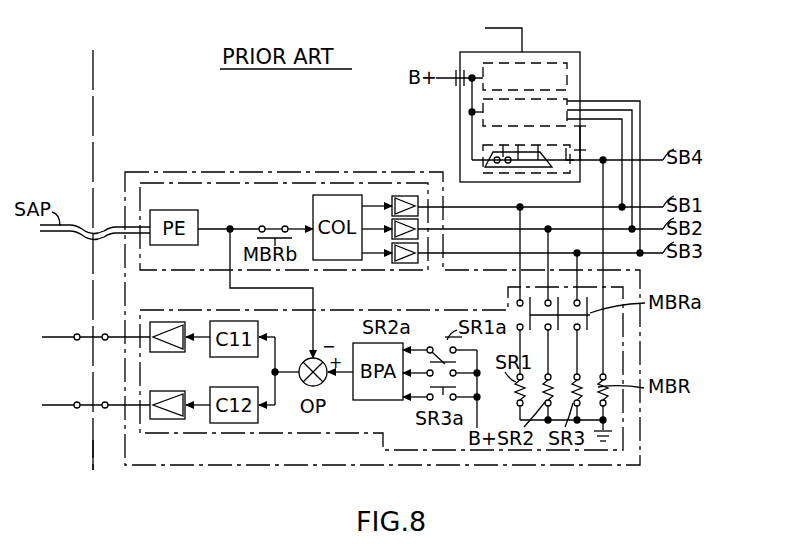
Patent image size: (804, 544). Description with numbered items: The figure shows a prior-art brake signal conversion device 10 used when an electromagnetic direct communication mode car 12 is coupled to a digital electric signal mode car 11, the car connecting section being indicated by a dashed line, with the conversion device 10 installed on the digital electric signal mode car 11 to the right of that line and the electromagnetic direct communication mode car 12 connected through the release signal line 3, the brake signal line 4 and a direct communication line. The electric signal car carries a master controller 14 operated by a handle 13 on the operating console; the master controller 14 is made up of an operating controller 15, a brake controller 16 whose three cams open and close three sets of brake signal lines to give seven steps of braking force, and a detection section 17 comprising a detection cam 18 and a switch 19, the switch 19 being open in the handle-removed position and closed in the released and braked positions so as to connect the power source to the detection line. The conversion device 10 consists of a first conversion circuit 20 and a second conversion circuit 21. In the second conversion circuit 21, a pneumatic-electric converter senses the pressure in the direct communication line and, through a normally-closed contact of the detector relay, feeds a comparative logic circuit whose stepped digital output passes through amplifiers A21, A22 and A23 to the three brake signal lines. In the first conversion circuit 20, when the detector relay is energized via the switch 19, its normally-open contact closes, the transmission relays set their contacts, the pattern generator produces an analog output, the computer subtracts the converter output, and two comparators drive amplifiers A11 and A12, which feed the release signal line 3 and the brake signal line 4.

The release signal line 3 is at (55, 337).
The brake signal line 4 is at (55, 405).
The brake signal conversion device 10 is at (272, 170).
The digital electric signal mode car 11 is at (96, 479).
The electromagnetic direct communication mode car 12 is at (90, 480).
The handle 13 is at (503, 28).
The master controller 14 is at (550, 49).
The operating controller 15 is at (567, 79).
The brake controller 16 is at (567, 104).
The detection section 17 is at (583, 145).
The detection cam 18 is at (537, 168).
The switch 19 is at (509, 168).
The first conversion circuit 20 is at (626, 422).
The second conversion circuit 21 is at (185, 182).
The amplifier A11 is at (166, 322).
The amplifier A12 is at (168, 386).
The amplifier A21 is at (418, 200).
The amplifier A22 is at (392, 229).
The amplifier A23 is at (400, 263).